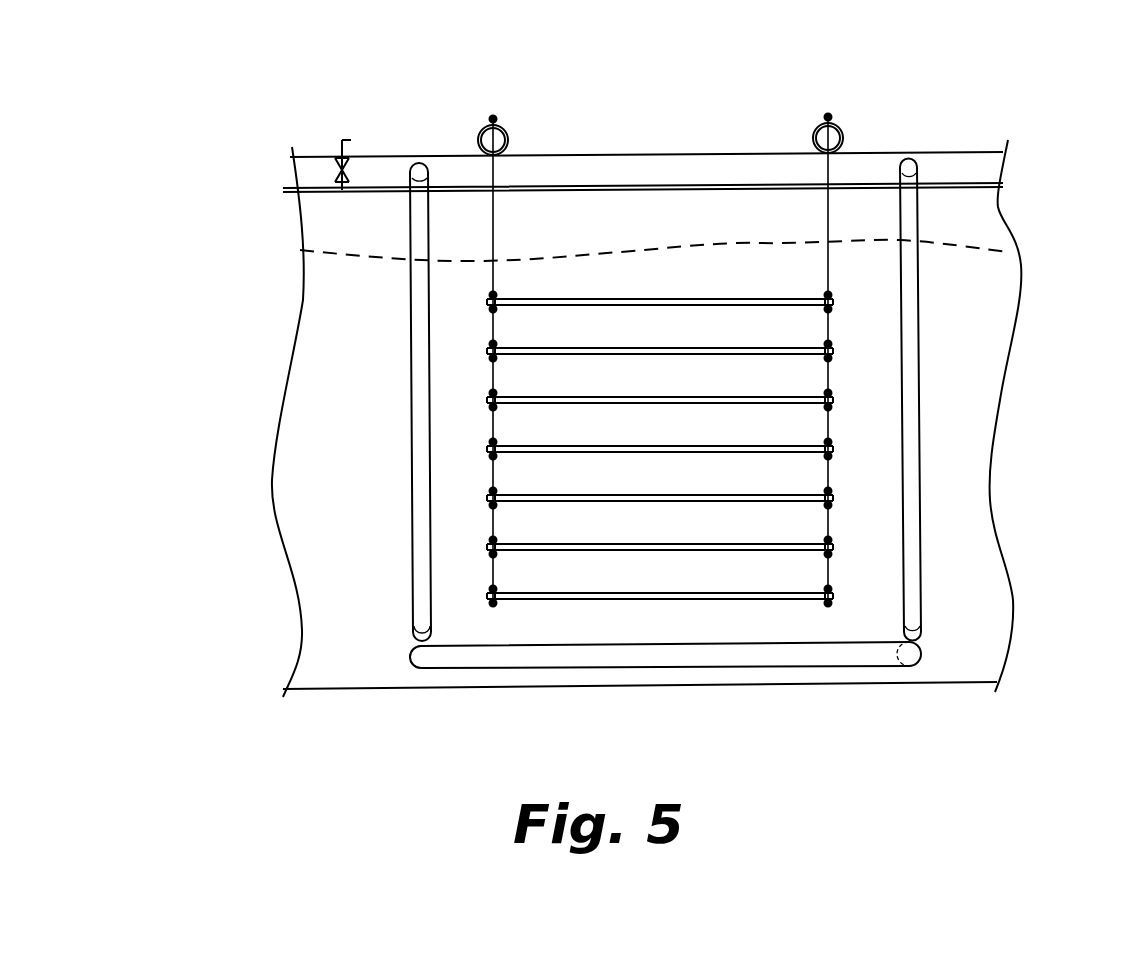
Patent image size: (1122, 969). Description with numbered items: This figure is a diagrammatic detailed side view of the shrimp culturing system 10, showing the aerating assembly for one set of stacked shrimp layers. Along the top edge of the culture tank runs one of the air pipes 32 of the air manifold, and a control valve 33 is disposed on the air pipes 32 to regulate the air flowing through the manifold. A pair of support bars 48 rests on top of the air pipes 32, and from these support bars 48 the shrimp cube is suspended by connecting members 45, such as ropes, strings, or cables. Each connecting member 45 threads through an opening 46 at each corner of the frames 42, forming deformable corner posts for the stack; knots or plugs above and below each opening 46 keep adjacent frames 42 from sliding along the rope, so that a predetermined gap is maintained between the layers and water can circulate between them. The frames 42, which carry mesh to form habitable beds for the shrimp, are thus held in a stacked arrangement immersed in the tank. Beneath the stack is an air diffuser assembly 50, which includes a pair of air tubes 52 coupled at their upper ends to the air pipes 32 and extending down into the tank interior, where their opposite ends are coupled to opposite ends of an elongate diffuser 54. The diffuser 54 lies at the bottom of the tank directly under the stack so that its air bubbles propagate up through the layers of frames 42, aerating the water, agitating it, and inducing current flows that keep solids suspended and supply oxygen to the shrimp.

The shrimp culturing system 10 is at (215, 95).
The air pipes 32 is at (950, 150).
The control valve 33 is at (342, 140).
The frames 42 is at (545, 594).
The connecting member 45 is at (495, 212).
The opening 46 is at (838, 292).
The support bars 48 is at (498, 128).
The air diffuser assembly 50 is at (330, 404).
The air tubes 52 is at (413, 450).
The diffuser 54 is at (497, 670).